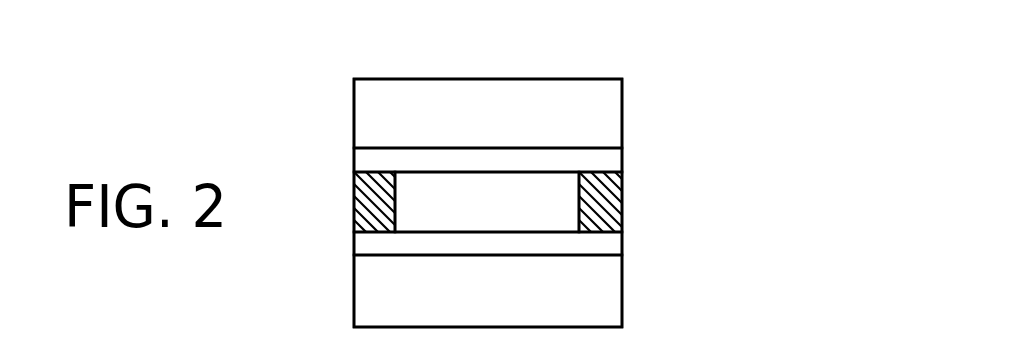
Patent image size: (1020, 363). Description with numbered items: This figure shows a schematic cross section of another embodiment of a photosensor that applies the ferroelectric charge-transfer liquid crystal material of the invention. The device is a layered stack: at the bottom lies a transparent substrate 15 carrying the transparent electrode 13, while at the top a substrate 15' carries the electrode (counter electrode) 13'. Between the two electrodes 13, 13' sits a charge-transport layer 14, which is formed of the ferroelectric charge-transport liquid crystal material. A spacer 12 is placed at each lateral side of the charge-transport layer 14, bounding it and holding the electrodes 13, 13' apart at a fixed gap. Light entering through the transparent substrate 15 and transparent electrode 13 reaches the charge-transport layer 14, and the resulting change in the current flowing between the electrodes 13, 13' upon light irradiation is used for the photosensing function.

The spacer 12 is at (613, 192).
The transparent electrode 13 is at (531, 154).
The electrode (counter electrode) 13' is at (535, 237).
The charge-transport layer 14 is at (493, 180).
The transparent substrate 15 is at (531, 291).
The substrate 15' is at (535, 113).